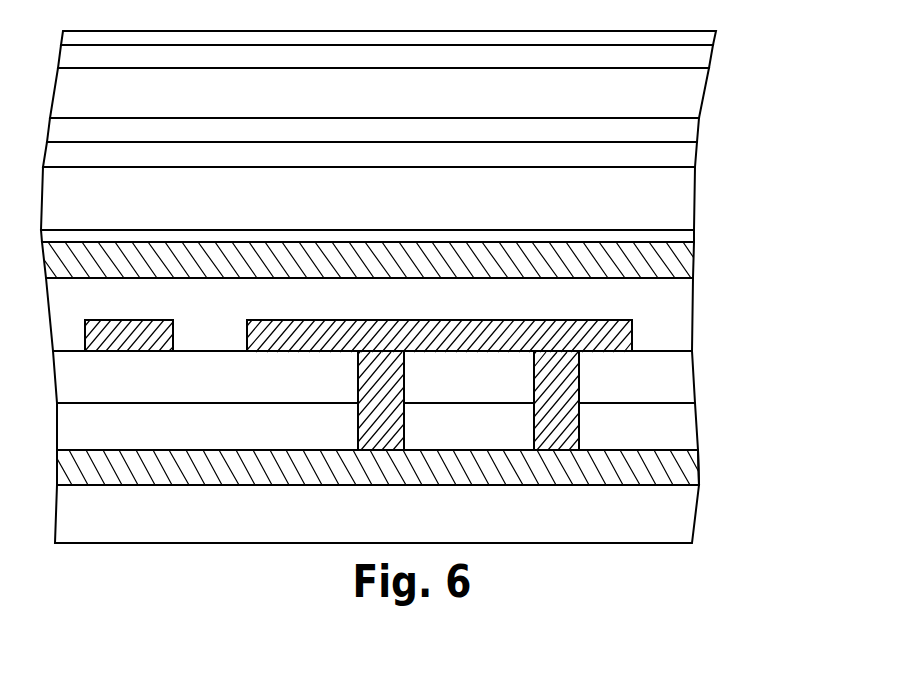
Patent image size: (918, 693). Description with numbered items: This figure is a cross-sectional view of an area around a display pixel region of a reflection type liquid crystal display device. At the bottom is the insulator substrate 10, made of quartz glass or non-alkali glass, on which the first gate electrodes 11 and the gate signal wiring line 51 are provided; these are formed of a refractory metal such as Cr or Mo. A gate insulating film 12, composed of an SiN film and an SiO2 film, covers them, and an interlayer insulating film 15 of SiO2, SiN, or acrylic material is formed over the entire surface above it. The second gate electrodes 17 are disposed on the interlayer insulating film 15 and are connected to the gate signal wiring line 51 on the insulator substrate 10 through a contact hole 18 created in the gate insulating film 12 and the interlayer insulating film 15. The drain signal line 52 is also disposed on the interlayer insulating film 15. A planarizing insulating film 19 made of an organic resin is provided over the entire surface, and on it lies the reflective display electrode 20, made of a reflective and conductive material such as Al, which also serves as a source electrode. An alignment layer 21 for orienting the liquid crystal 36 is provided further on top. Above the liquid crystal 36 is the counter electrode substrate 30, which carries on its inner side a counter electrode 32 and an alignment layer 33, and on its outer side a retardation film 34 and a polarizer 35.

The insulator substrate 10 is at (685, 520).
The first gate electrodes 11 is at (685, 470).
The gate signal wiring line 51 is at (440, 465).
The gate insulating film 12 is at (686, 428).
The interlayer insulating film 15 is at (680, 380).
The second gate electrodes 17 is at (557, 325).
The contact hole 18 is at (404, 373).
The planarizing insulating film 19 is at (679, 323).
The reflective display electrode 20 is at (681, 262).
The alignment layer 21 is at (694, 232).
The counter electrode substrate 30 is at (694, 90).
The counter electrode 32 is at (692, 128).
The alignment layer 33 is at (690, 155).
The retardation film 34 is at (702, 58).
The polarizer 35 is at (701, 39).
The liquid crystal 36 is at (684, 208).
The drain signal line 52 is at (122, 330).